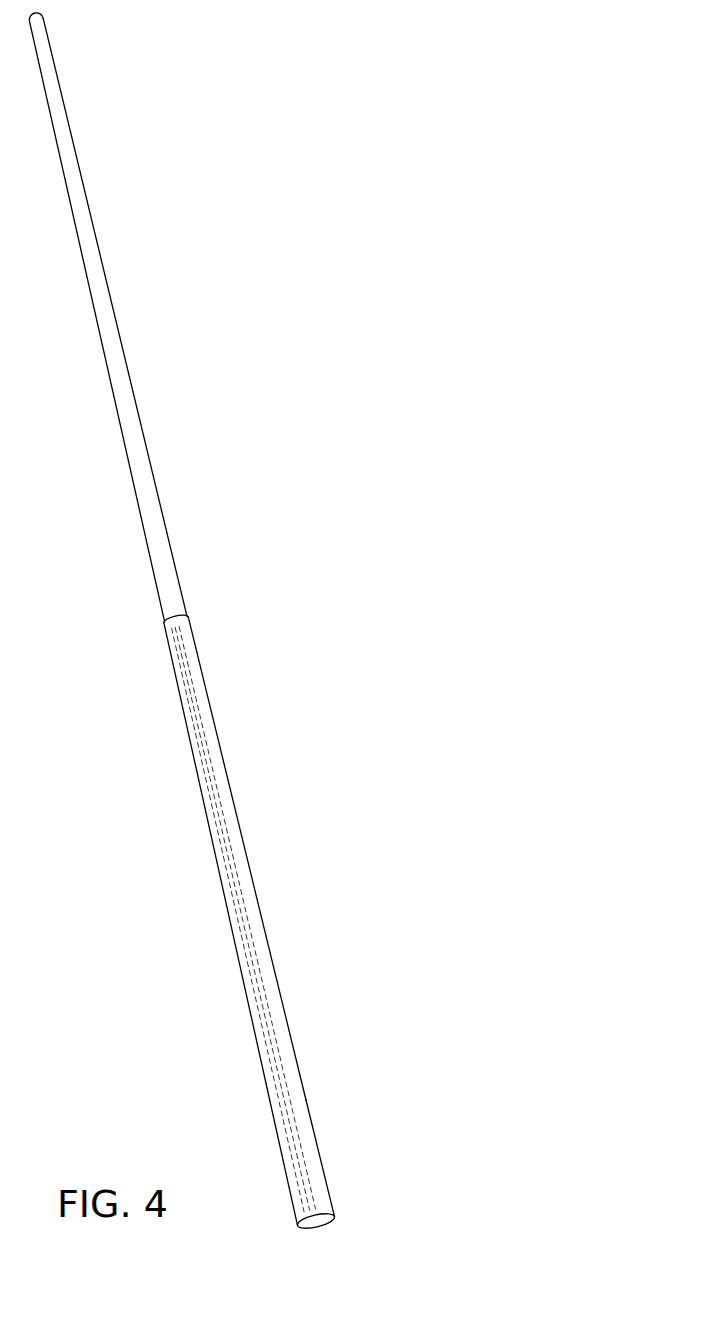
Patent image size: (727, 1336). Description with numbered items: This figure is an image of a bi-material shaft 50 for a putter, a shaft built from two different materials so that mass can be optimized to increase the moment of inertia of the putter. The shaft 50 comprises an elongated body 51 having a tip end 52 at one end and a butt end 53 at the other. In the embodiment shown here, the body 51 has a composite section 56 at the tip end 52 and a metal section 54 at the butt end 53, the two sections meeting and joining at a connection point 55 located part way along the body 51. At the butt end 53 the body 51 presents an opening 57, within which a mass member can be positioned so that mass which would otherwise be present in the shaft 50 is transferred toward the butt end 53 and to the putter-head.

The bi-material shaft 50 is at (355, 651).
The body 51 is at (190, 626).
The tip end 52 is at (50, 13).
The butt end 53 is at (348, 1212).
The metal section 54 is at (256, 948).
The connection point 55 is at (166, 627).
The composite section 56 is at (124, 440).
The opening 57 is at (317, 1228).